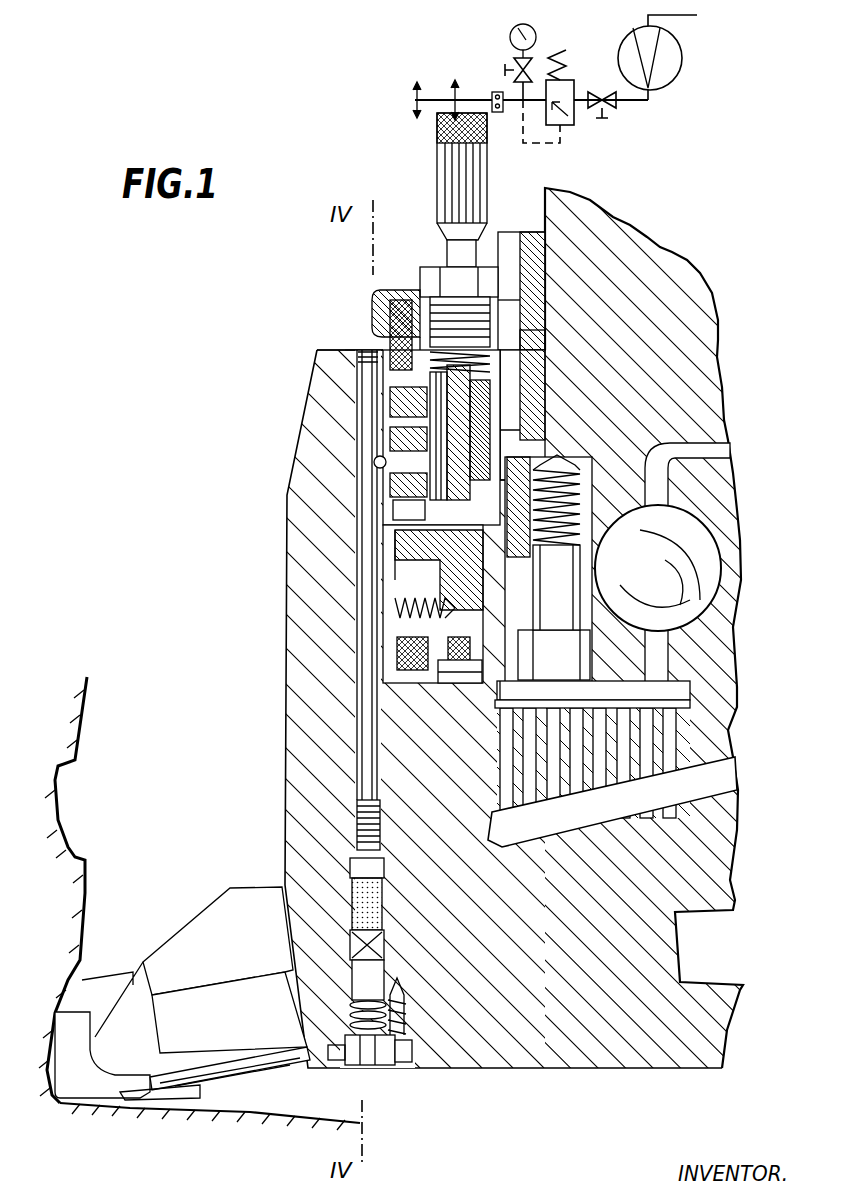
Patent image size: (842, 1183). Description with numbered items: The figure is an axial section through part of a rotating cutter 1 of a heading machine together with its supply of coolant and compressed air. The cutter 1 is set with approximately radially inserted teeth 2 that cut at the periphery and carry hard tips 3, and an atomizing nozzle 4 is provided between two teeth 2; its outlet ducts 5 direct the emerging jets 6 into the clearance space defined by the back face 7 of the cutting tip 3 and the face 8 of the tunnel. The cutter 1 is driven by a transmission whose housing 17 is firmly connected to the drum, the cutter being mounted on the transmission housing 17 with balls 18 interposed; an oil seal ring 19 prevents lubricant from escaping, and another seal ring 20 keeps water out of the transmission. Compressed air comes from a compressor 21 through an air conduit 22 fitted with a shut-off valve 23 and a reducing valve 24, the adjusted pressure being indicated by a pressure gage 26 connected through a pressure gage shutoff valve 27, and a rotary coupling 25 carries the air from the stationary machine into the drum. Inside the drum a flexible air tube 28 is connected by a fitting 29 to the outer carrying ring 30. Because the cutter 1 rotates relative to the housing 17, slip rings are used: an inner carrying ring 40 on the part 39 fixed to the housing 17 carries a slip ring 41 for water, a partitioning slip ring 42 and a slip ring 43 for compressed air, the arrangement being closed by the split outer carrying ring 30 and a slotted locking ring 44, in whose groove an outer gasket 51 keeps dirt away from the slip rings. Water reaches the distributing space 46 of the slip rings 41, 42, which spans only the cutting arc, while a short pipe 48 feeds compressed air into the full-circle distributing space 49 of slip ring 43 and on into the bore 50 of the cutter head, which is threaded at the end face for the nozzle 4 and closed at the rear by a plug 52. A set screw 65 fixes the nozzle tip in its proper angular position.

The rotating cutter 1 is at (335, 812).
The teeth 2 is at (193, 947).
The hard tip 3 is at (78, 1033).
The atomizing nozzle 4 is at (283, 885).
The outlet duct 5 is at (378, 1063).
The jet 6 is at (225, 1073).
The back face of the cutting tip 7 is at (137, 1103).
The face of the tunnel 8 is at (188, 1098).
The transmission housing 17 is at (620, 240).
The balls 18 is at (658, 568).
The oil seal ring 19 is at (455, 685).
The seal ring 20 is at (395, 652).
The compressor 21 is at (668, 63).
The air conduit 22 is at (650, 103).
The shut-off valve 23 is at (615, 107).
The reducing valve 24 is at (570, 125).
The rotary coupling 25 is at (536, 139).
The pressure gage 26 is at (536, 30).
The pressure gage shutoff valve 27 is at (515, 65).
The flexible air tube 28 is at (437, 128).
The fitting 29 is at (450, 280).
The outer carrying ring 30 is at (492, 348).
The part firmly connected to the transmission housing 39 is at (420, 556).
The inner carrying ring 40 is at (505, 428).
The slip ring for the supply of water 41 is at (408, 400).
The partitioning slip ring 42 is at (395, 440).
The slip ring for a supply of compressed air 43 is at (392, 490).
The locking ring 44 is at (372, 318).
The distributing space 46 is at (445, 430).
The short pipe 48 is at (374, 463).
The distributing space 49 is at (385, 478).
The bore 50 is at (358, 765).
The outer gasket 51 is at (377, 295).
The plug 52 is at (345, 350).
The set screw 65 is at (410, 1050).